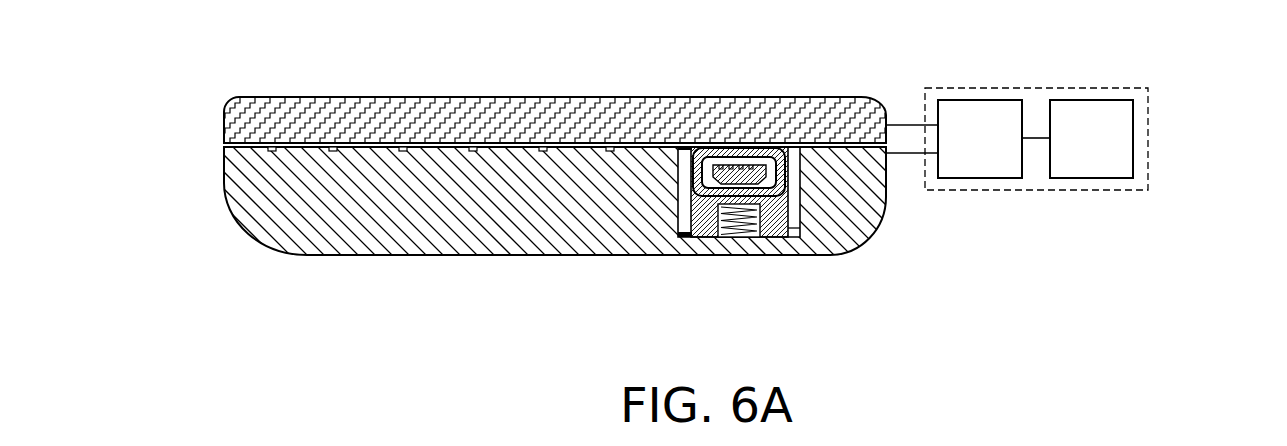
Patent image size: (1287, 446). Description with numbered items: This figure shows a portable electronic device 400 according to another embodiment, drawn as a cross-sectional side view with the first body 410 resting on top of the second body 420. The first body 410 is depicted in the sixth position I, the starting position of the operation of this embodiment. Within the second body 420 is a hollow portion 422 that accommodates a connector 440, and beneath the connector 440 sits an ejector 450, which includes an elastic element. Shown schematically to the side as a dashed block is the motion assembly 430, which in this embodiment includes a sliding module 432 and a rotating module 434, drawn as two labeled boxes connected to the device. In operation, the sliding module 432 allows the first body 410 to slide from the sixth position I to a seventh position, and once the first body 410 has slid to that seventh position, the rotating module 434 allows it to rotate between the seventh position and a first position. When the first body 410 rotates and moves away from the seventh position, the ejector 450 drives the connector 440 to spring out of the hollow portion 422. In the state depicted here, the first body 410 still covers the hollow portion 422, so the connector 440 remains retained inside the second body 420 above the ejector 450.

The portable electronic device 400 is at (692, 174).
The first body 410 is at (486, 113).
The second body 420 is at (380, 235).
The hollow portion 422 is at (690, 196).
The motion assembly 430 is at (1078, 96).
The sliding module 432 is at (982, 100).
The rotating module 434 is at (1095, 100).
The connector 440 is at (787, 172).
The ejector 450 is at (728, 237).
The sixth position I is at (215, 122).